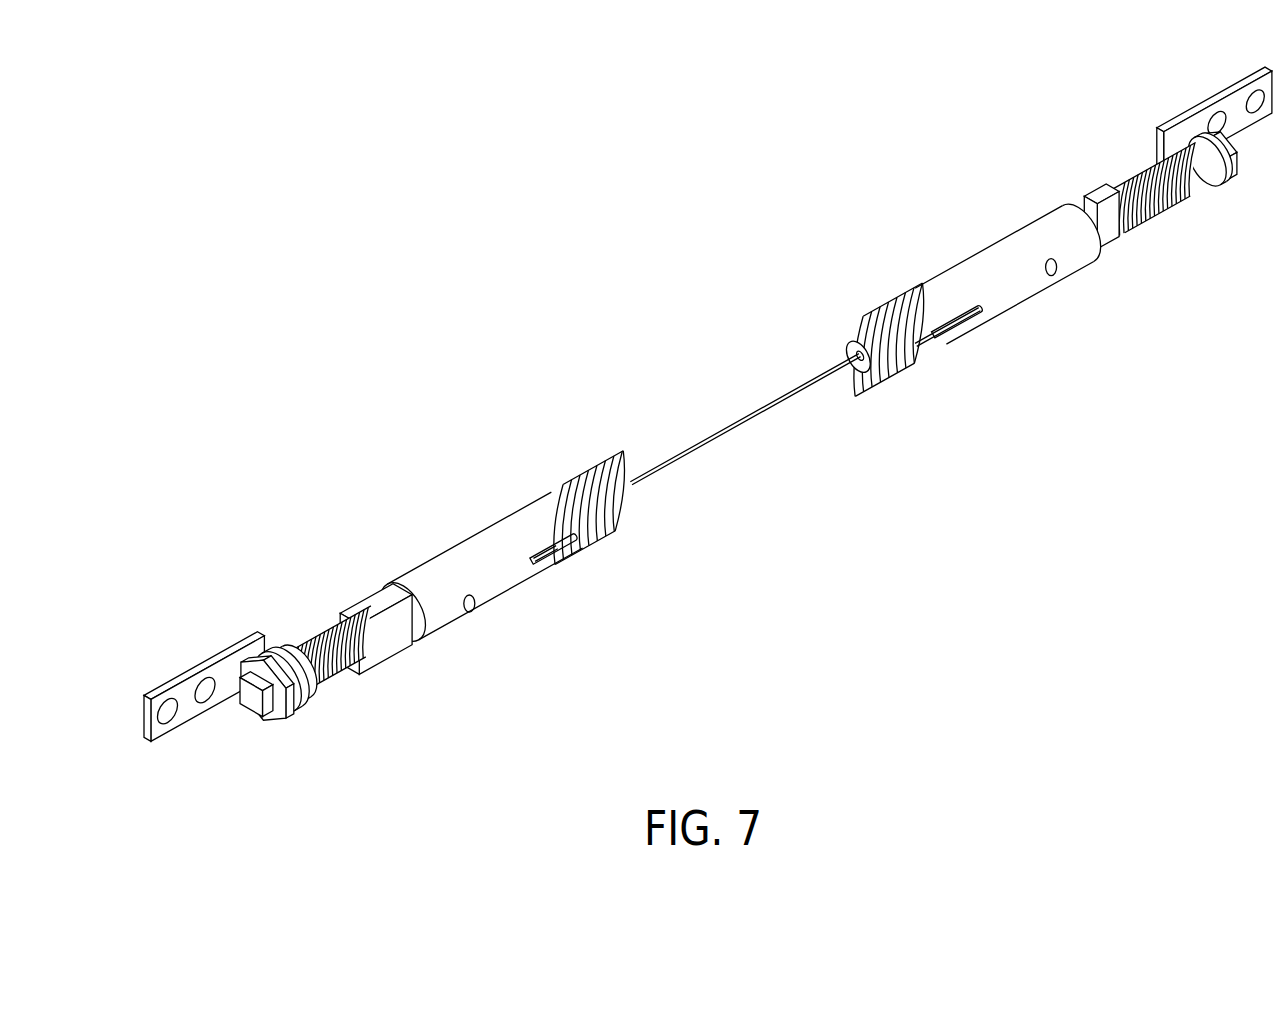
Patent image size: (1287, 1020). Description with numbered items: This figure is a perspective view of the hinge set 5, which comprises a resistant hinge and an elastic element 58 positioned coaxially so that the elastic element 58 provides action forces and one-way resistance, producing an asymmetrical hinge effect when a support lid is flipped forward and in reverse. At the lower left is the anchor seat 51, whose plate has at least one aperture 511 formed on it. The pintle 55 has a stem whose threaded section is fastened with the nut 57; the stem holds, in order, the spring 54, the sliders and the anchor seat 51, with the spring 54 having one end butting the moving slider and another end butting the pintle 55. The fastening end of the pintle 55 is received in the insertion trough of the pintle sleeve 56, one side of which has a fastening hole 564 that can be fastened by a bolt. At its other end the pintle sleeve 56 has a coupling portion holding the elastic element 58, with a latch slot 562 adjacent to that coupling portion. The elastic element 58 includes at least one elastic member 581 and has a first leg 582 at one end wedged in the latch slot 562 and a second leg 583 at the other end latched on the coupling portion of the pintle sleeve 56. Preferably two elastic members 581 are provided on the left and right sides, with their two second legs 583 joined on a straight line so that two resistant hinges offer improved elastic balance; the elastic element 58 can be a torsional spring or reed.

The hinge set 5 is at (708, 458).
The anchor seat 51 is at (204, 681).
The aperture 511 is at (180, 715).
The spring 54 is at (349, 667).
The pintle 55 is at (377, 603).
The pintle sleeve 56 is at (485, 565).
The latch slot 562 is at (548, 565).
The fastening hole 564 is at (472, 605).
The nut 57 is at (287, 706).
The elastic element 58 is at (694, 464).
The elastic member 581 is at (597, 470).
The first leg 582 is at (568, 548).
The second leg 583 is at (753, 408).